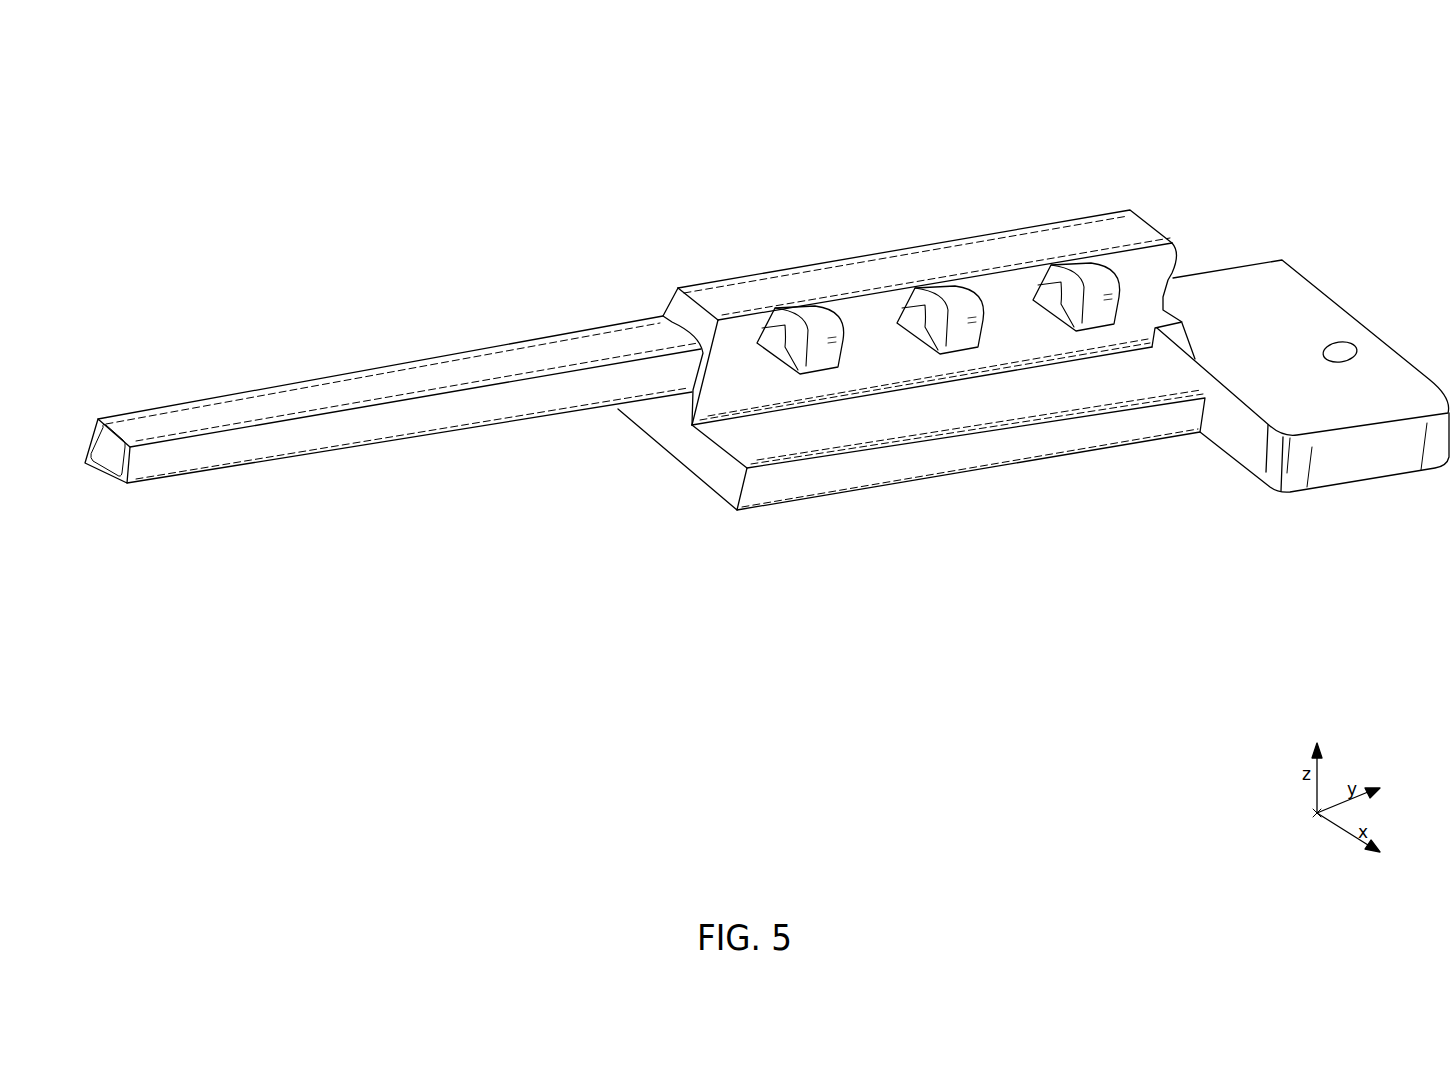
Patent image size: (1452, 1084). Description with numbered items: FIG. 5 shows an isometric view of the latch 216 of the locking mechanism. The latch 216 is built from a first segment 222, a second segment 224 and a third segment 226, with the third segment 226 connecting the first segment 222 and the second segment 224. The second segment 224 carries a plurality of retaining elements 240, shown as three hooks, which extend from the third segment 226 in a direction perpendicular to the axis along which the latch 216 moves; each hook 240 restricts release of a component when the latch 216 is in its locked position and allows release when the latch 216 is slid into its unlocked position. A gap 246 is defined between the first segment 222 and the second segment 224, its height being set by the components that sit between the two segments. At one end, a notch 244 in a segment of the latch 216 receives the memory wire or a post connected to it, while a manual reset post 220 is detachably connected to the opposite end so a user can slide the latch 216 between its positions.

The latch 216 is at (767, 325).
The manual reset post 220 is at (247, 392).
The first segment 222 is at (860, 472).
The second segment 224 is at (803, 315).
The third segment 226 is at (682, 307).
The retaining element 240 is at (945, 295).
The notch 244 is at (1333, 342).
The gap 246 is at (743, 422).